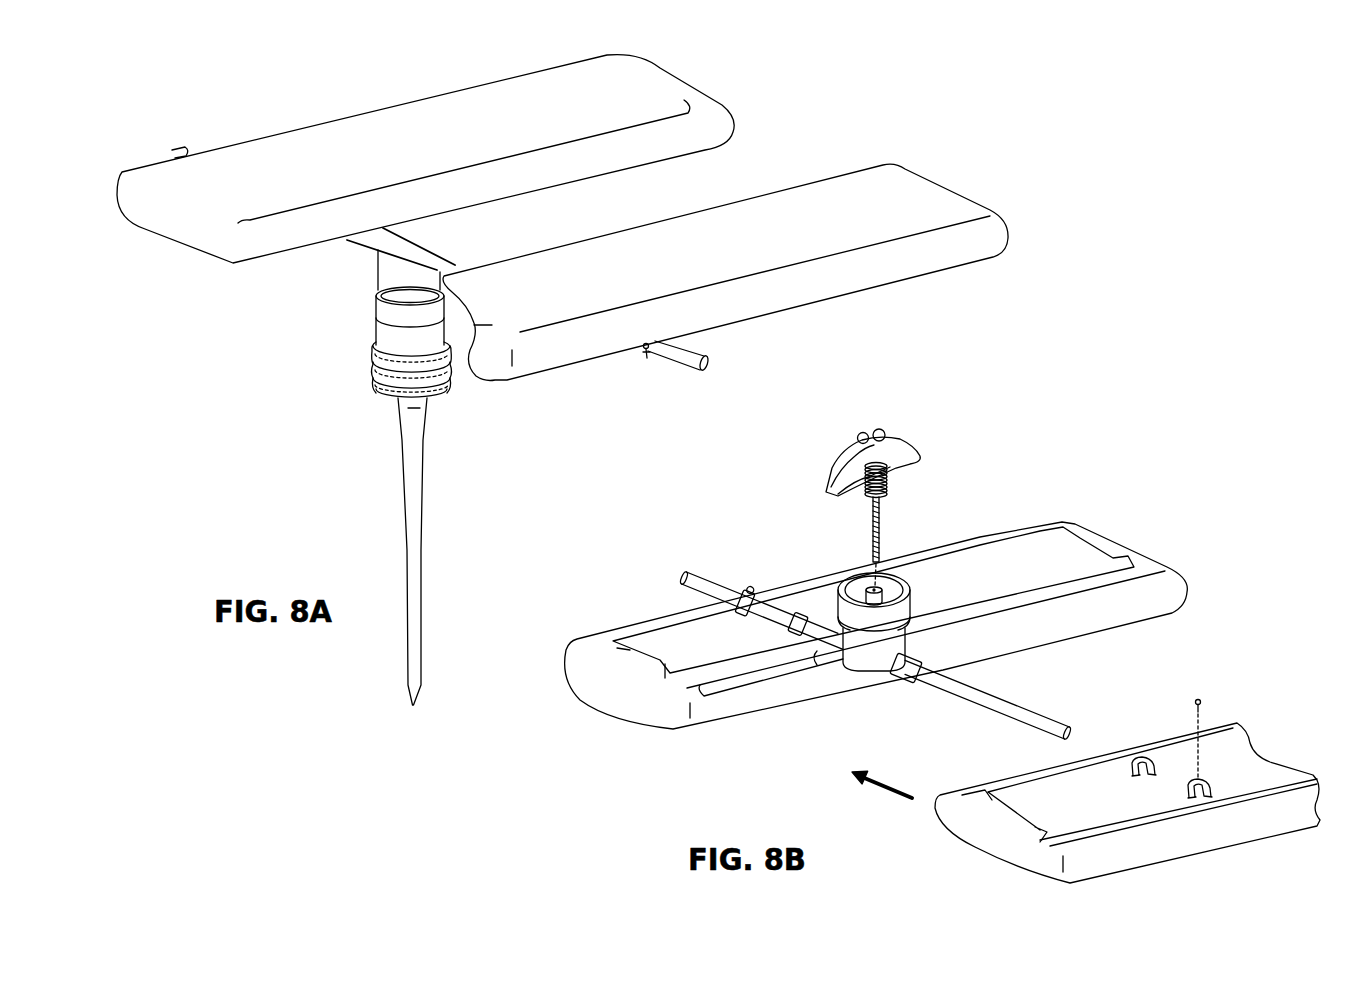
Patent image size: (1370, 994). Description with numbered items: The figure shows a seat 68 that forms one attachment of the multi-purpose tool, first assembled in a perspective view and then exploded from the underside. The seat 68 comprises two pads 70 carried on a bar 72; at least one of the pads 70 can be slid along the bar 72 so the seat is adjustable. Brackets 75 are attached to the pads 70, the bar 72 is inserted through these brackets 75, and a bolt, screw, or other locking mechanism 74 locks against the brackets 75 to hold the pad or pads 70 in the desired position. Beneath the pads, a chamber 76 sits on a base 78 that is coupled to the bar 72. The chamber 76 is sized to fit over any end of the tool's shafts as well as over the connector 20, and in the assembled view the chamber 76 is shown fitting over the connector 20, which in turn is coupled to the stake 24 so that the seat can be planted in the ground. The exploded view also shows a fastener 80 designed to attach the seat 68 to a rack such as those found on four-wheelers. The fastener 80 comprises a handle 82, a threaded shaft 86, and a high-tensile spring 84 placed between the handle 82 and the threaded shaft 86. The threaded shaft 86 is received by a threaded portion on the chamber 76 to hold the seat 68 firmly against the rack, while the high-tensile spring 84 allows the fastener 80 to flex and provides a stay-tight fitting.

In FIG. 8A, the seat 68 is at (246, 122).
In FIG. 8A, the pads 70 is at (683, 99).
In FIG. 8B, the pads 70 is at (580, 682).
In FIG. 8A, the bar 72 is at (690, 364).
In FIG. 8B, the bar 72 is at (703, 582).
In FIG. 8A, the locking mechanism 74 is at (647, 360).
In FIG. 8B, the locking mechanism 74 is at (1193, 705).
In FIG. 8B, the brackets 75 is at (790, 630).
In FIG. 8A, the chamber 76 is at (398, 272).
In FIG. 8B, the chamber 76 is at (846, 608).
In FIG. 8A, the base 78 is at (438, 252).
In FIG. 8B, the base 78 is at (906, 688).
In FIG. 8A, the connector 20 is at (340, 364).
In FIG. 8A, the stake 24 is at (420, 501).
In FIG. 8B, the fastener 80 is at (914, 402).
In FIG. 8B, the handle 82 is at (918, 455).
In FIG. 8B, the high-tensile spring 84 is at (888, 478).
In FIG. 8B, the threaded shaft 86 is at (882, 535).